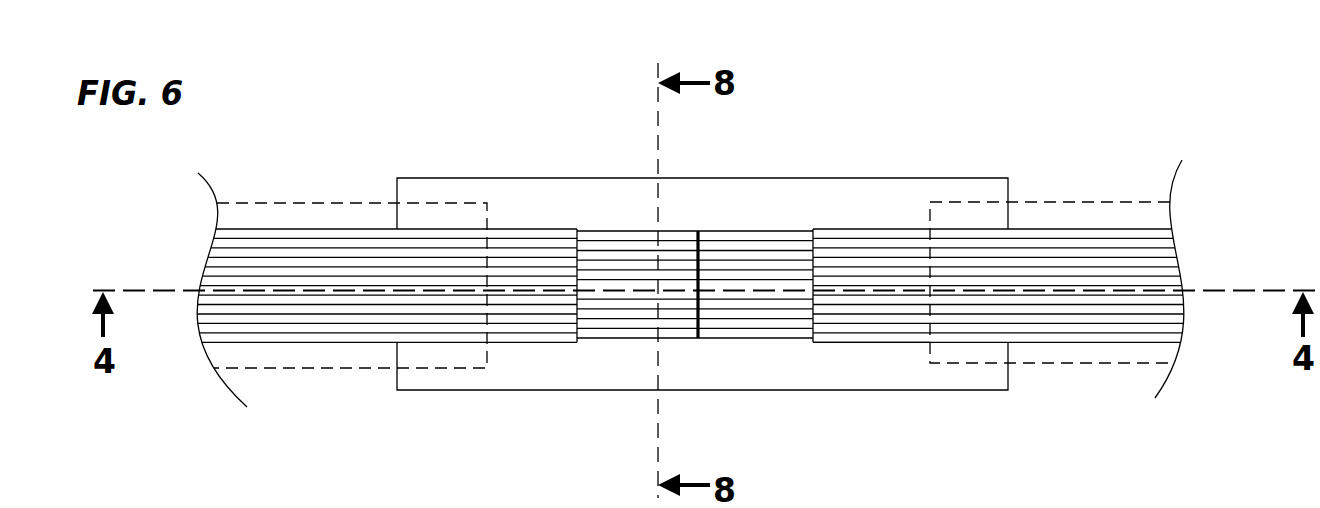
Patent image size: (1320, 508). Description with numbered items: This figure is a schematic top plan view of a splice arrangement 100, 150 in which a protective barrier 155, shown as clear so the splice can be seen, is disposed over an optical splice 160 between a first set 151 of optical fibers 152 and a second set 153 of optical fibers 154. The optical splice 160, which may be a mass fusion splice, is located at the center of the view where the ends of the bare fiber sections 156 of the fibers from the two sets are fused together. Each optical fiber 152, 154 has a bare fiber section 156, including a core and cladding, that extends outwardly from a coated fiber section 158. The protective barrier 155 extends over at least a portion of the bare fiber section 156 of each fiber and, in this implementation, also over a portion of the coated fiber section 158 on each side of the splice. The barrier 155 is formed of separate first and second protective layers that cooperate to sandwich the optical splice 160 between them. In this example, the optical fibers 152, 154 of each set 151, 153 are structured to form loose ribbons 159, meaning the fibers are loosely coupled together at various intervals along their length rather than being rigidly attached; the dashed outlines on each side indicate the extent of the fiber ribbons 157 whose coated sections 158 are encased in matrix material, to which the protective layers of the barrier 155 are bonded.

The splice arrangement 100 is at (706, 400).
The splice arrangement 150 is at (1163, 135).
The first set of optical fibers 151 is at (505, 350).
The first optical fiber 152 is at (610, 229).
The second set of optical fibers 153 is at (895, 345).
The second optical fiber 154 is at (793, 230).
The protective barrier 155 is at (463, 178).
The bare fiber section 156 is at (742, 340).
The fiber ribbon 157 is at (277, 203).
The coated fiber section 158 is at (850, 343).
The loose ribbon 159 is at (1025, 227).
The optical splice 160 is at (690, 229).